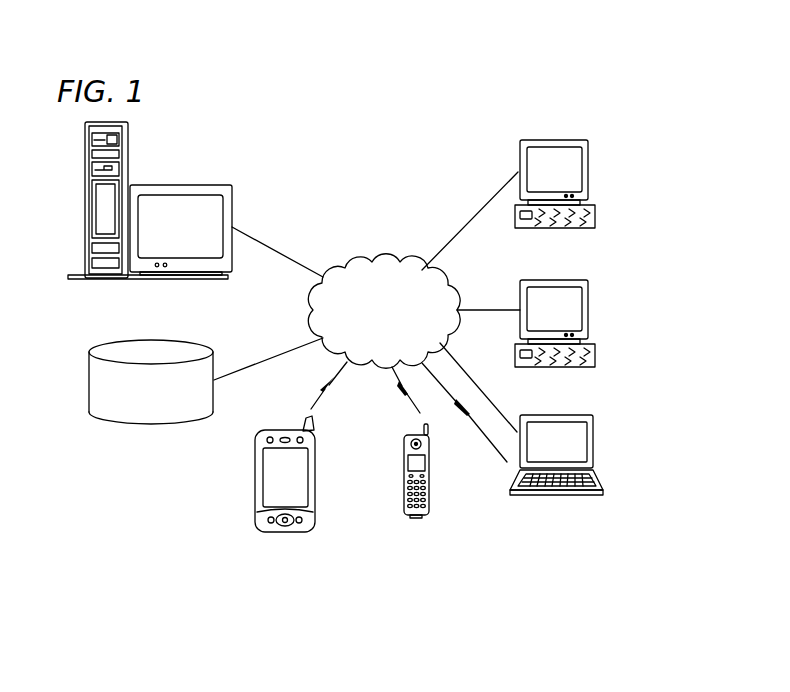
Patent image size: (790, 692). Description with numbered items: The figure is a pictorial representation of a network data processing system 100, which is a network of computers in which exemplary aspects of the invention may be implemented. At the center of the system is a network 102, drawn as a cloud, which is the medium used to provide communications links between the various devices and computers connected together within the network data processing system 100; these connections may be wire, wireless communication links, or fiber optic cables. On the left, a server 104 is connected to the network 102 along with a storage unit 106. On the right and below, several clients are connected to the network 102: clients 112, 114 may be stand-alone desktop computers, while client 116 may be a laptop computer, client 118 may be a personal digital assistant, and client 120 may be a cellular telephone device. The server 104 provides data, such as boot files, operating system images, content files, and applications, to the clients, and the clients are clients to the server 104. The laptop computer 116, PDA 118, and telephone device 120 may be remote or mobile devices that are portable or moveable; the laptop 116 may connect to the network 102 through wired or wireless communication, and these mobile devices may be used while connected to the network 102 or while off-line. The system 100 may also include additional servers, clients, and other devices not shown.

The network data processing system 100 is at (453, 150).
The network 102 is at (355, 262).
The server 104 is at (84, 205).
The storage unit 106 is at (135, 422).
The client 112 is at (590, 170).
The client 114 is at (590, 308).
The laptop computer 116 is at (595, 440).
The personal digital assistant (PDA) 118 is at (255, 478).
The cellular telephone device 120 is at (404, 482).